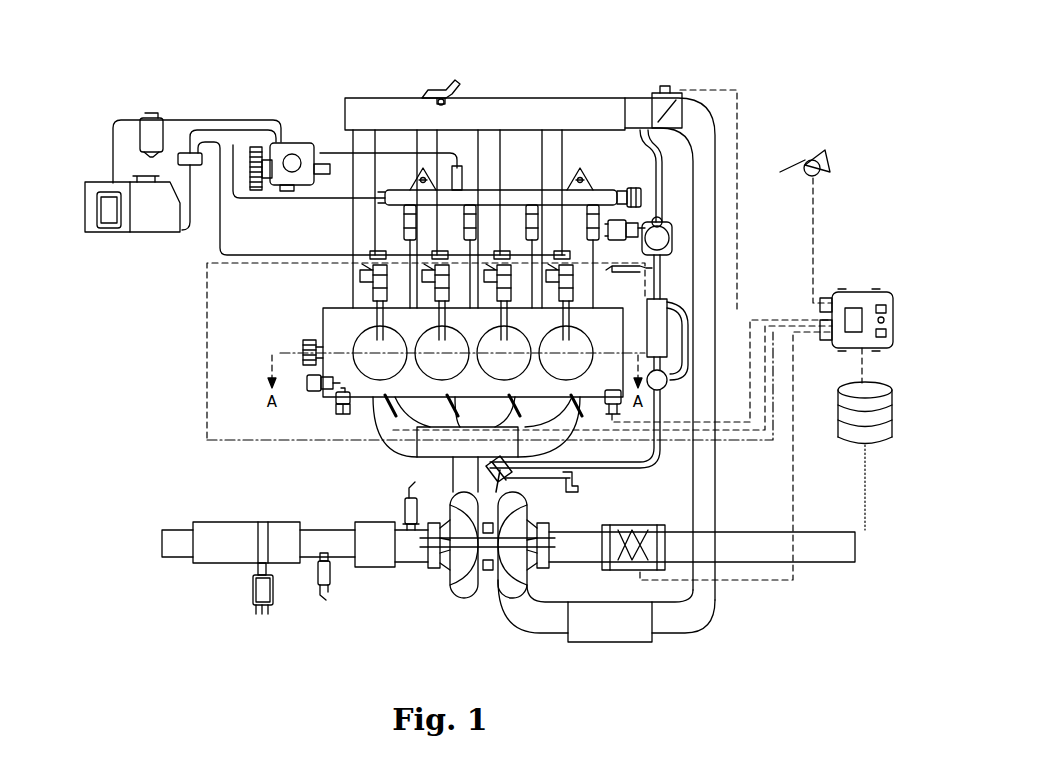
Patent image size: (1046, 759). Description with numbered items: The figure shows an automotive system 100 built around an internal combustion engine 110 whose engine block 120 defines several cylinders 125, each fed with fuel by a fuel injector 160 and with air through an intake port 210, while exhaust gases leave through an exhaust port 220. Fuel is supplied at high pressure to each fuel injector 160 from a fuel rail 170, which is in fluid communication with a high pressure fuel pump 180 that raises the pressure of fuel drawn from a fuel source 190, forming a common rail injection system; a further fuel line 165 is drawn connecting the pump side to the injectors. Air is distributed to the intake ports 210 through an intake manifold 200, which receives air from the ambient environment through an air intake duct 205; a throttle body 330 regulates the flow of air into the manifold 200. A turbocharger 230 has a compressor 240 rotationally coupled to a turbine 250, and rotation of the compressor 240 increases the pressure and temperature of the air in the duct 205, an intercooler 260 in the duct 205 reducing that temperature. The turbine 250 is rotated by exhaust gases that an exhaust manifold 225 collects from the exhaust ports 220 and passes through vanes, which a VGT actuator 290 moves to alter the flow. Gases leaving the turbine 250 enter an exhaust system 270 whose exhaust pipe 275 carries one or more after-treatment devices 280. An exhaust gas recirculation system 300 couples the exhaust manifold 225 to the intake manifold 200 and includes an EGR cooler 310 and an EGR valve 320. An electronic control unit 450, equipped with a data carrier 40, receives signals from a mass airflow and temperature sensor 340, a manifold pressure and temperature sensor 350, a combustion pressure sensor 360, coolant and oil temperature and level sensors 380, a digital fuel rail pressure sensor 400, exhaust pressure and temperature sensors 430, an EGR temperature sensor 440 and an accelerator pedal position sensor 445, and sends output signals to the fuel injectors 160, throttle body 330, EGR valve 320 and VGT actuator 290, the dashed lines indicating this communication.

The automotive system 100 is at (262, 86).
The internal combustion engine 110 is at (578, 92).
The engine block 120 is at (323, 318).
The cylinder 125 is at (590, 335).
The fuel injector 160 is at (383, 292).
The direct injection fuel line 165 is at (385, 234).
The fuel rail 170 is at (393, 197).
The high pressure fuel pump 180 is at (297, 135).
The fuel source 190 is at (150, 220).
The intake manifold 200 is at (490, 118).
The air intake duct 205 is at (823, 535).
The intake port 210 is at (368, 310).
The exhaust port 220 is at (372, 400).
The exhaust manifold 225 is at (394, 506).
The turbocharger 230 is at (458, 607).
The compressor 240 is at (512, 572).
The turbine 250 is at (462, 567).
The intercooler 260 is at (632, 627).
The exhaust system 270 is at (232, 507).
The exhaust pipe 275 is at (175, 545).
The exhaust after-treatment device 280 is at (218, 545).
The VGT actuator 290 is at (504, 484).
The exhaust gas recirculation system 300 is at (632, 472).
The EGR cooler 310 is at (660, 343).
The EGR valve 320 is at (662, 226).
The throttle body 330 is at (668, 88).
The mass airflow and temperature sensor 340 is at (640, 570).
The manifold pressure and temperature sensor 350 is at (428, 86).
The combustion pressure sensor 360 is at (443, 448).
The coolant and oil temperature and level sensors 380 is at (340, 406).
The digital pressure sensor 400 is at (641, 196).
The exhaust pressure and temperature sensors 430 is at (323, 601).
The EGR temperature sensor 440 is at (660, 266).
The accelerator pedal position sensor 445 is at (815, 158).
The electronic control unit 450 is at (862, 290).
The data carrier 40 is at (865, 456).